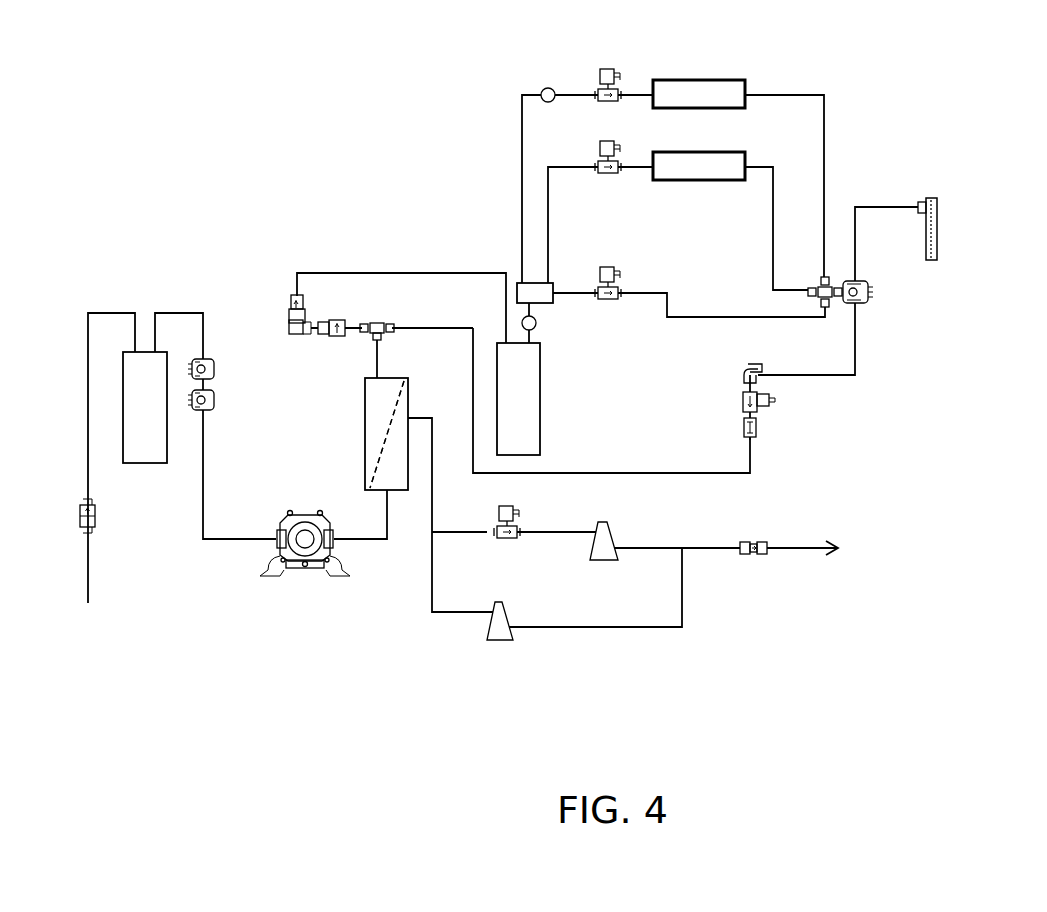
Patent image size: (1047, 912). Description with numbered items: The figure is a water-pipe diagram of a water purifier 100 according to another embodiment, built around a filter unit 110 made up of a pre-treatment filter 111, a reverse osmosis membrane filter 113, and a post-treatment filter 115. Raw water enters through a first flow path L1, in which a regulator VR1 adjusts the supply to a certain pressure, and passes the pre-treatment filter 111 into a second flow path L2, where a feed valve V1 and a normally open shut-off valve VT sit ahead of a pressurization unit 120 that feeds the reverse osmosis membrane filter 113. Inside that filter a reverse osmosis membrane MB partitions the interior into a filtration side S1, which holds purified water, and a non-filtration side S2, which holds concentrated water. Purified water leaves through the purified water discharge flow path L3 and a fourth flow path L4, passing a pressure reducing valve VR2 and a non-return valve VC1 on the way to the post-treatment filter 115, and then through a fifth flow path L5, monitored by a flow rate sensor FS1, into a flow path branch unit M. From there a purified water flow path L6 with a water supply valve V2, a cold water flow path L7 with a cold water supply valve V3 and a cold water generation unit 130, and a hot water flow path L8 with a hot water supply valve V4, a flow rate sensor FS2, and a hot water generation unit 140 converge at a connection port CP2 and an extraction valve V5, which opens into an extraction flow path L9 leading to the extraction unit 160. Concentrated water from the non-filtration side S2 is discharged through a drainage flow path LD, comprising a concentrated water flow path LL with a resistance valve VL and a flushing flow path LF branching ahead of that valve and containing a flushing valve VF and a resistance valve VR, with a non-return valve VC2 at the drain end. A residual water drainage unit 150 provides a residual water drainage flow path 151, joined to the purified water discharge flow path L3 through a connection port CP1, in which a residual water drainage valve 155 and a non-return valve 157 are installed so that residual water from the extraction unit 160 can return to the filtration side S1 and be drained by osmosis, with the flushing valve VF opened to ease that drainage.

The water purifier 100 is at (156, 190).
The filter unit 110 is at (236, 120).
The pre-treatment filter 111 is at (143, 465).
The reverse osmosis membrane filter 113 is at (396, 493).
The post-treatment filter 115 is at (541, 390).
The pressurization unit 120 is at (304, 575).
The cold water generation unit 130 is at (714, 152).
The hot water generation unit 140 is at (714, 80).
The residual water drainage unit 150 is at (331, 120).
The residual water drainage flow path 151 is at (650, 472).
The residual water drainage valve 155 is at (771, 401).
The non-return valve 157 is at (769, 428).
The extraction unit 160 is at (938, 226).
The first flow path L1 is at (85, 398).
The second flow path L2 is at (211, 547).
The purified water discharge flow path L3 is at (375, 369).
The fourth flow path L4 is at (378, 272).
The fifth flow path L5 is at (531, 312).
The purified water flow path L6 is at (705, 316).
The cold water flow path L7 is at (578, 169).
The hot water flow path L8 is at (581, 93).
The extraction flow path L9 is at (896, 206).
The flushing flow path LF is at (540, 534).
The concentrated water flow path LL is at (585, 627).
The drainage flow path LD is at (797, 551).
The feed valve V1 is at (217, 377).
The shut-off valve VT is at (217, 405).
The water supply valve V2 is at (607, 269).
The cold water supply valve V3 is at (609, 141).
The hot water supply valve V4 is at (609, 69).
The extraction valve V5 is at (870, 290).
The flushing valve VF is at (514, 509).
The resistance valve VR is at (617, 533).
The resistance valve VL is at (509, 612).
The regulator VR1 is at (79, 522).
The pressure reducing valve VR2 is at (322, 336).
The non-return valve VC1 is at (291, 313).
The non-return valve VC2 is at (753, 555).
The connection port CP1 is at (378, 322).
The connection port CP2 is at (814, 284).
The flow rate sensor FS1 is at (537, 326).
The flow rate sensor FS2 is at (549, 87).
The flow path branch unit M is at (520, 282).
The reverse osmosis membrane MB is at (390, 418).
The filtration side S1 is at (379, 437).
The non-filtration side S2 is at (395, 469).